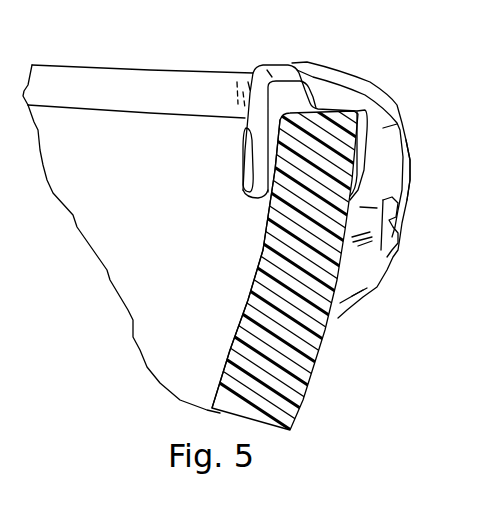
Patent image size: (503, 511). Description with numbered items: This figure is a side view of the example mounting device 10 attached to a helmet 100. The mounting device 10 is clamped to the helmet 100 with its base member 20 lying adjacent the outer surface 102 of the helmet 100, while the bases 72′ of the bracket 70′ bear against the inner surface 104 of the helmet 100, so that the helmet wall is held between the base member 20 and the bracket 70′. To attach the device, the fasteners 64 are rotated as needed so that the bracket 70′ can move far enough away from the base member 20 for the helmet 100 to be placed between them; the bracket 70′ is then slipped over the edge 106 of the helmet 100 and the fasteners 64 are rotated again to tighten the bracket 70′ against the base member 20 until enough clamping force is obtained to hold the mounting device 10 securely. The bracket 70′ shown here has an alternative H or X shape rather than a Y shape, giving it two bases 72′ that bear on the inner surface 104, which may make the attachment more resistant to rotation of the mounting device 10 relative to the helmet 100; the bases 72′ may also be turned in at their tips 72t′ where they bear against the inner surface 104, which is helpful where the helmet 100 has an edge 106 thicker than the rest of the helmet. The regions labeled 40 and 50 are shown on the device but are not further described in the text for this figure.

The mounting device 10 is at (377, 65).
The base member 20 is at (397, 123).
The housing side wall 40 is at (410, 190).
The latch bracket 50 is at (403, 213).
The fasteners 64 is at (420, 262).
The bracket 70′ is at (277, 64).
The bases 72′ is at (247, 110).
The clip tongue 72t′ is at (241, 173).
The helmet 100 is at (143, 67).
The outer surface 102 is at (322, 342).
The inner surface 104 is at (248, 297).
The edge 106 is at (57, 65).